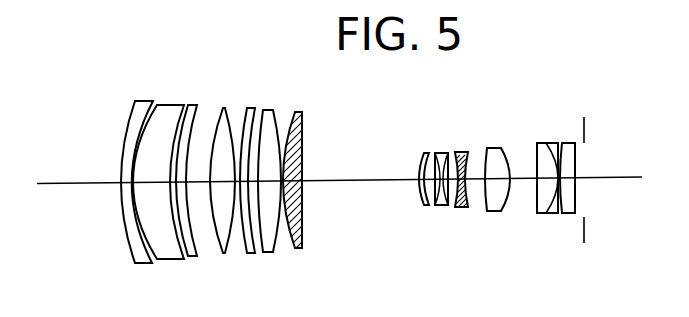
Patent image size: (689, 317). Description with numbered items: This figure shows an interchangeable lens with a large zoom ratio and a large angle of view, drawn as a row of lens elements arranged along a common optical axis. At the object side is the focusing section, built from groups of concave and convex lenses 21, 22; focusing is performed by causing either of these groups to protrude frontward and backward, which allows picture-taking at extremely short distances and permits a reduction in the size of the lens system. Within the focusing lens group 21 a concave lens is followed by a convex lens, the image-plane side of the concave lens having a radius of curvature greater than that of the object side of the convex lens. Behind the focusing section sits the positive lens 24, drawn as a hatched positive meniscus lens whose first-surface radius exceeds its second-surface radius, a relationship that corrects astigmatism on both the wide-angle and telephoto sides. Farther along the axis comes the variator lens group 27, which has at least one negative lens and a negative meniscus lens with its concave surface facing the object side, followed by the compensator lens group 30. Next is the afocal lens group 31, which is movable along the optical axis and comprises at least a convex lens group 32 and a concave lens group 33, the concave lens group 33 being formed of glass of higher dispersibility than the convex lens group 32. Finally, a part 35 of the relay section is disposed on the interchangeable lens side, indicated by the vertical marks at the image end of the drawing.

The focusing lens group 21 is at (200, 85).
The focusing lens group 22 is at (297, 85).
The positive lens 24 is at (302, 238).
The variator lens group 27 is at (463, 135).
The compensator lens group 30 is at (512, 135).
The afocal lens group 31 is at (555, 186).
The convex lens group 32 is at (568, 215).
The concave lens group 33 is at (540, 215).
The part of the relay section 35 is at (584, 118).